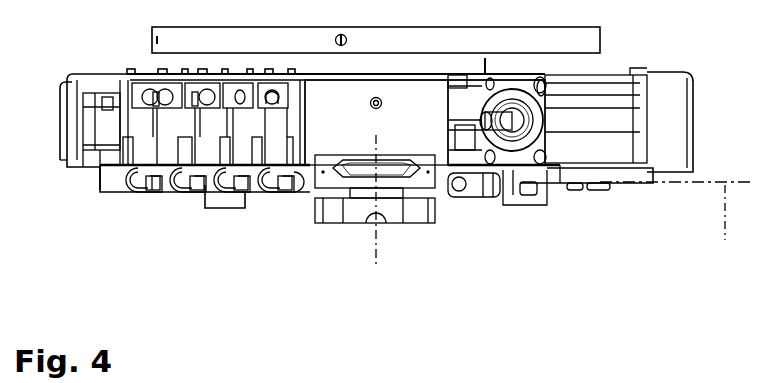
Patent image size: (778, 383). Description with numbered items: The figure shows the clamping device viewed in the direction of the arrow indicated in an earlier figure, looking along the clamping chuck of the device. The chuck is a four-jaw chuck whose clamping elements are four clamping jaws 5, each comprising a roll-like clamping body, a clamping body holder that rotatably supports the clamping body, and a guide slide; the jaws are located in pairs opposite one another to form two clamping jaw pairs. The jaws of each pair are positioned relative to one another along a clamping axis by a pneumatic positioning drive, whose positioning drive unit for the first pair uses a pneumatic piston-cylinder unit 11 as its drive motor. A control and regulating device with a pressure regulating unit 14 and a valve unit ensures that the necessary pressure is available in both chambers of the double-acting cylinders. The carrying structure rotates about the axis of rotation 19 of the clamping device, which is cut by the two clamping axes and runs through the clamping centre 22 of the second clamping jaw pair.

The pressure regulating unit 14 is at (160, 195).
The clamping jaw 5 is at (361, 220).
The clamping centre 22 is at (375, 186).
The axis of rotation 19 is at (377, 243).
The pneumatic piston-cylinder unit 11 is at (563, 162).